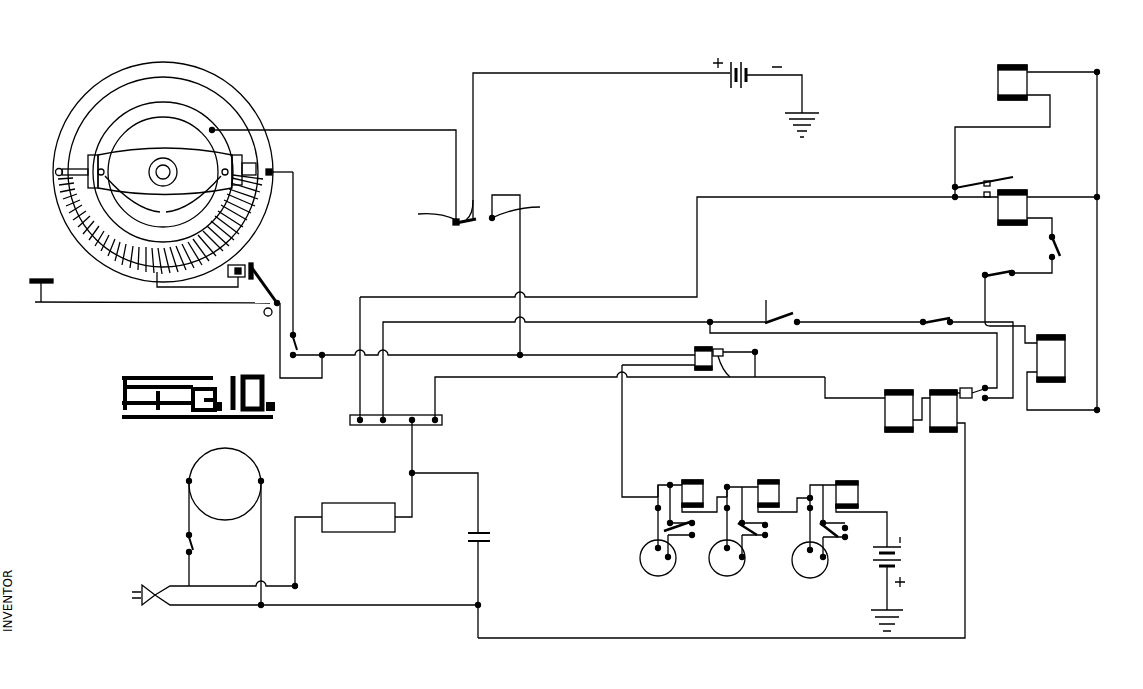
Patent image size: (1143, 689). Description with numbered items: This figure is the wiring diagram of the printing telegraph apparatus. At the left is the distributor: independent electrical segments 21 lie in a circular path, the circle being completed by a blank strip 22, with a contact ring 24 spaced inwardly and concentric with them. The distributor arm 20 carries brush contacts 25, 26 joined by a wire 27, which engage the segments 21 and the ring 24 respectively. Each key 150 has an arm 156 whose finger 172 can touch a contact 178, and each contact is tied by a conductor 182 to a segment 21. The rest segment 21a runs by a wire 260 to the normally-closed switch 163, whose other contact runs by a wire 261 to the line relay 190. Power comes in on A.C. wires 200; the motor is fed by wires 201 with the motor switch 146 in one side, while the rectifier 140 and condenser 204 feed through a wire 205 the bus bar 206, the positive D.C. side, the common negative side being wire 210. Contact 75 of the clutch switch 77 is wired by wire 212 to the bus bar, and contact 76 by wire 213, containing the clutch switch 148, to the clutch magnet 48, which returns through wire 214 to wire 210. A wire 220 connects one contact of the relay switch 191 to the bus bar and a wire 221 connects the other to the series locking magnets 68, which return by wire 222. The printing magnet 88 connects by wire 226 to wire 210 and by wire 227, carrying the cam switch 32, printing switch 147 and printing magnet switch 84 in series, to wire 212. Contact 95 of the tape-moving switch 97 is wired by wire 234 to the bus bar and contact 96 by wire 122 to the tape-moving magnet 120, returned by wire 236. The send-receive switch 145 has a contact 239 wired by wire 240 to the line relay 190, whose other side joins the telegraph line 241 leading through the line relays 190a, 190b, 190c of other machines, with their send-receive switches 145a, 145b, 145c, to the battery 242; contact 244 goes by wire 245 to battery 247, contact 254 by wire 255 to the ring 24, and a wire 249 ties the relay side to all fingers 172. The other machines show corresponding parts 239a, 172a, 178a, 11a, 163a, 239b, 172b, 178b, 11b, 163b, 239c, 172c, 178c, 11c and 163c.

The blank strip 22 is at (115, 78).
The contact ring 24 is at (200, 120).
The distributor arm 20 is at (120, 162).
The wire 27 is at (212, 152).
The brush contact 25 is at (59, 169).
The brush contact 26 is at (130, 198).
The electrical segments 21 is at (155, 277).
The segment 21a is at (275, 168).
The wire 260 is at (295, 172).
The contact 178 is at (246, 263).
The conductor 182 is at (187, 288).
The finger 172 is at (255, 270).
The arm 156 is at (87, 302).
The keys 150 is at (42, 279).
The wire 249 is at (298, 378).
The normally-closed switch 163 is at (297, 350).
The wire 261 is at (407, 358).
The wire 255 is at (352, 130).
The wire 245 is at (533, 78).
The battery 247 is at (740, 90).
The contact 244 is at (476, 208).
The contact 254 is at (456, 222).
The send-receive switch 145 is at (466, 224).
The contact 239 is at (492, 222).
The wire 240 is at (520, 238).
The wire 234 is at (848, 197).
The wire 212 is at (560, 322).
The bus bar 206 is at (393, 425).
The wire 220 is at (527, 378).
The wire 221 is at (824, 388).
The line relay 190 is at (695, 350).
The relay switch 191 is at (732, 372).
The telegraph line 241 is at (621, 438).
The tape-moving magnet 120 is at (998, 83).
The wire 236 is at (1057, 72).
The wire 210 is at (1098, 282).
The wire 122 is at (955, 150).
The contact 96 is at (985, 180).
The tape-moving switch 97 is at (1018, 183).
The contact 95 is at (973, 209).
The printing magnet 88 is at (1025, 210).
The wire 226 is at (1062, 197).
The cam switch 32 is at (1050, 250).
The wire 227 is at (1038, 275).
The printing and tape switch 147 is at (1000, 271).
The wire 213 is at (990, 322).
The clutch switch 148 is at (938, 320).
The clutch magnet 48 is at (1062, 355).
The wire 214 is at (1062, 410).
The contact 75 is at (766, 305).
The contact 76 is at (796, 313).
The clutch switch 77 is at (784, 325).
The printing magnet switch 84 is at (985, 385).
The locking magnets 68 is at (975, 418).
The wire 222 is at (967, 525).
The wires 201 is at (188, 506).
The motor switch 146 is at (187, 542).
The wires 200 is at (172, 586).
The rectifier 140 is at (360, 533).
The wire 205 is at (480, 486).
The condenser 204 is at (490, 540).
The send-receive switch 145a is at (657, 496).
The contact 239a is at (671, 484).
The line relay 190a is at (688, 490).
The switch arm 172a is at (665, 527).
The contact 178a is at (663, 536).
The lamp 11a is at (648, 569).
The switch 163a is at (692, 540).
The contact 239b is at (729, 487).
The send-receive switch 145b is at (742, 486).
The line relay 190b is at (768, 481).
The switch arm 172b is at (745, 528).
The contact 178b is at (757, 538).
The lamp 11b is at (723, 574).
The switch 163b is at (768, 528).
The contact 239c is at (811, 496).
The send-receive switch 145c is at (808, 489).
The line relay 190c is at (848, 482).
The switch arm 172c is at (825, 524).
The contact 178c is at (827, 540).
The lamp 11c is at (820, 572).
The switch 163c is at (823, 532).
The battery 242 is at (898, 568).